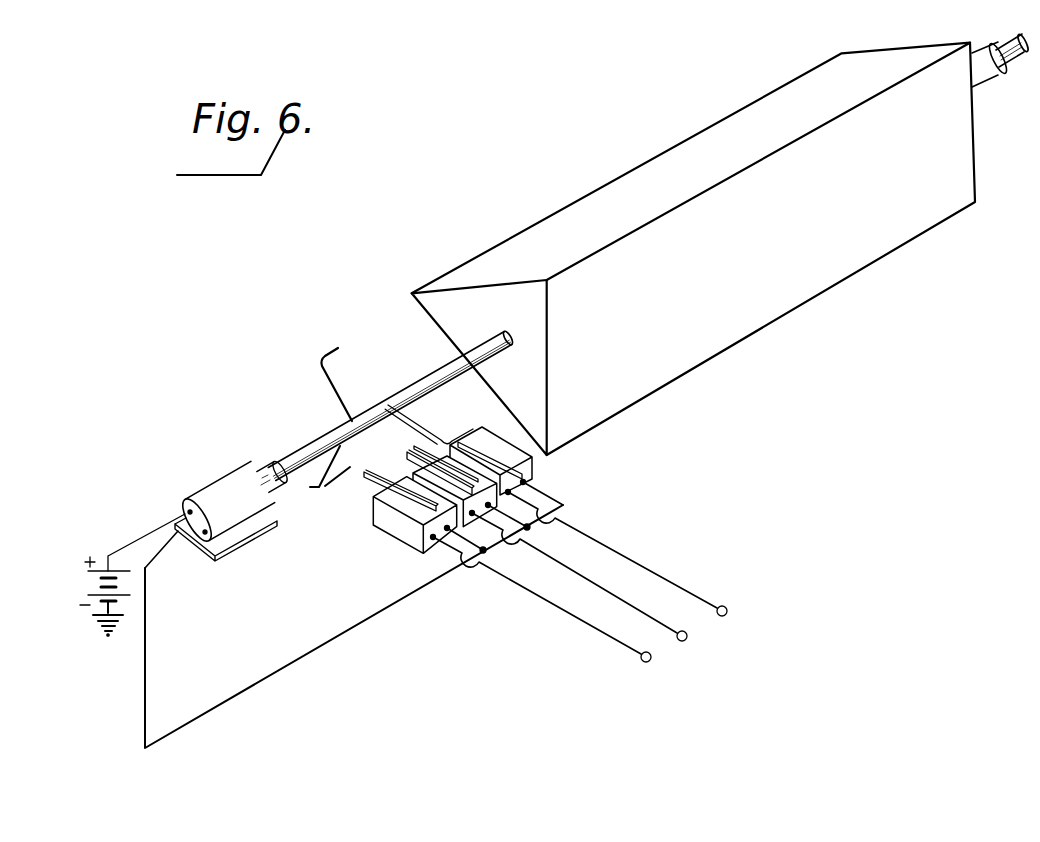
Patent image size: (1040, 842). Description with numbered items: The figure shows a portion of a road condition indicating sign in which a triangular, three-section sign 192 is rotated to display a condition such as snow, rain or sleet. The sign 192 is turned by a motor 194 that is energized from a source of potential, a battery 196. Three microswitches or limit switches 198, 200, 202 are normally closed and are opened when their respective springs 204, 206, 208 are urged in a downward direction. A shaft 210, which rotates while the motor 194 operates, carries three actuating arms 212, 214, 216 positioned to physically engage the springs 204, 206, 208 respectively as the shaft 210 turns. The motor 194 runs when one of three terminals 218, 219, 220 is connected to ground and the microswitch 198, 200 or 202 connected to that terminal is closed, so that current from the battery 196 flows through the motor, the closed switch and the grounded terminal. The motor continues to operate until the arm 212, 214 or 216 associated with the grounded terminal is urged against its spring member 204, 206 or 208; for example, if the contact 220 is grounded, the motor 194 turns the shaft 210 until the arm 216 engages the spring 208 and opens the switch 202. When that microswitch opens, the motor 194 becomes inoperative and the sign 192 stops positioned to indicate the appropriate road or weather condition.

The sign 192 is at (657, 391).
The motor 194 is at (238, 470).
The battery 196 is at (92, 583).
The microswitch 198 is at (397, 528).
The microswitch 200 is at (416, 470).
The microswitch 202 is at (536, 473).
The spring 204 is at (370, 477).
The spring 206 is at (414, 447).
The spring 208 is at (444, 433).
The shaft 210 is at (315, 440).
The actuating arm 212 is at (322, 486).
The actuating arm 214 is at (338, 357).
The actuating arm 216 is at (466, 437).
The terminal 218 is at (653, 658).
The terminal 219 is at (689, 637).
The terminal 220 is at (729, 612).